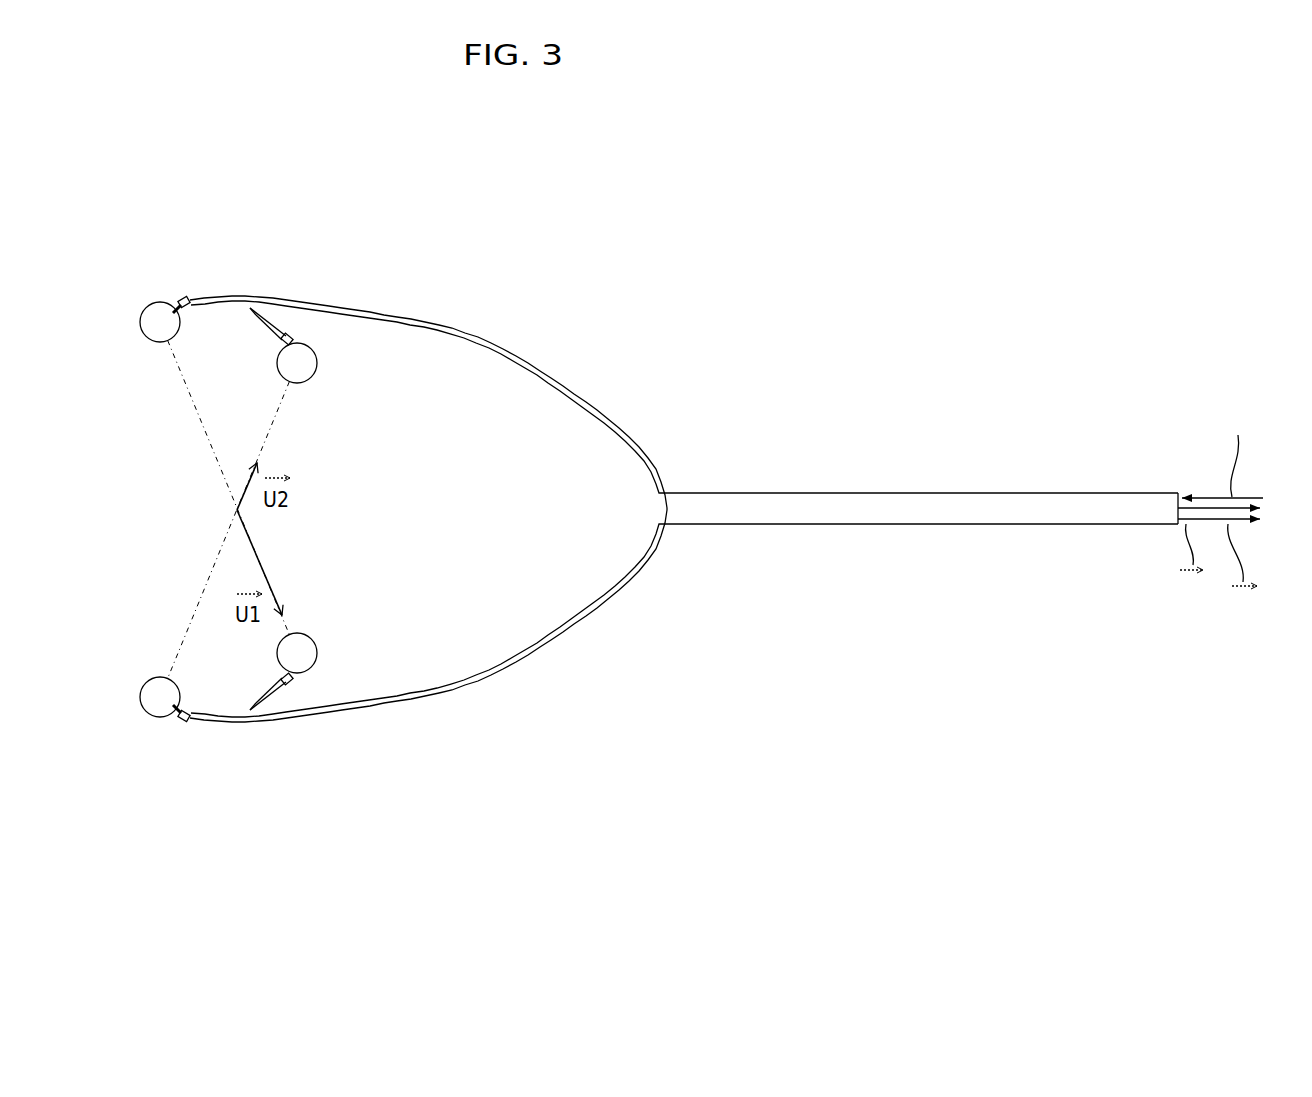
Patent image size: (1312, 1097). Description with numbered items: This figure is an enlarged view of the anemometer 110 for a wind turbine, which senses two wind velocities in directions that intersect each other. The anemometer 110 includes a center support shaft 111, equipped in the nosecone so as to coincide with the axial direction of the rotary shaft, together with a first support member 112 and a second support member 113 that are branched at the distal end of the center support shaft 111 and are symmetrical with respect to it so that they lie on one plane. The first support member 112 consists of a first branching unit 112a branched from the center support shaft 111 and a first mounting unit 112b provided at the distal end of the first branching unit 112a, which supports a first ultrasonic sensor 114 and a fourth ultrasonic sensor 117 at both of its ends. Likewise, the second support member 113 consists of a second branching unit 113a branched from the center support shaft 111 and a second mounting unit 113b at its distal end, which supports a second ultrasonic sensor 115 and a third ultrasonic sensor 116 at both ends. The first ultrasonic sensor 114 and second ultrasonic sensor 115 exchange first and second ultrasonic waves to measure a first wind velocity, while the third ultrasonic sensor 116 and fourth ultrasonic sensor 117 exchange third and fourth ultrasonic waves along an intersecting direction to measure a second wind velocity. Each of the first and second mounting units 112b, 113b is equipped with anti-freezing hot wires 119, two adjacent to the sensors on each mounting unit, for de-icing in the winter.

The anemometer for a wind turbine 110 is at (705, 388).
The center support shaft 111 is at (893, 505).
The first support member 112 is at (421, 369).
The first branching unit 112a is at (517, 300).
The first mounting unit 112b is at (198, 297).
The second support member 113 is at (421, 659).
The second branching unit 113a is at (513, 665).
The second mounting unit 113b is at (202, 722).
The first ultrasonic sensor 114 is at (157, 318).
The second ultrasonic sensor 115 is at (300, 658).
The third ultrasonic sensor 116 is at (157, 705).
The fourth ultrasonic sensor 117 is at (300, 360).
The anti-freezing hot wire 119 is at (182, 298).